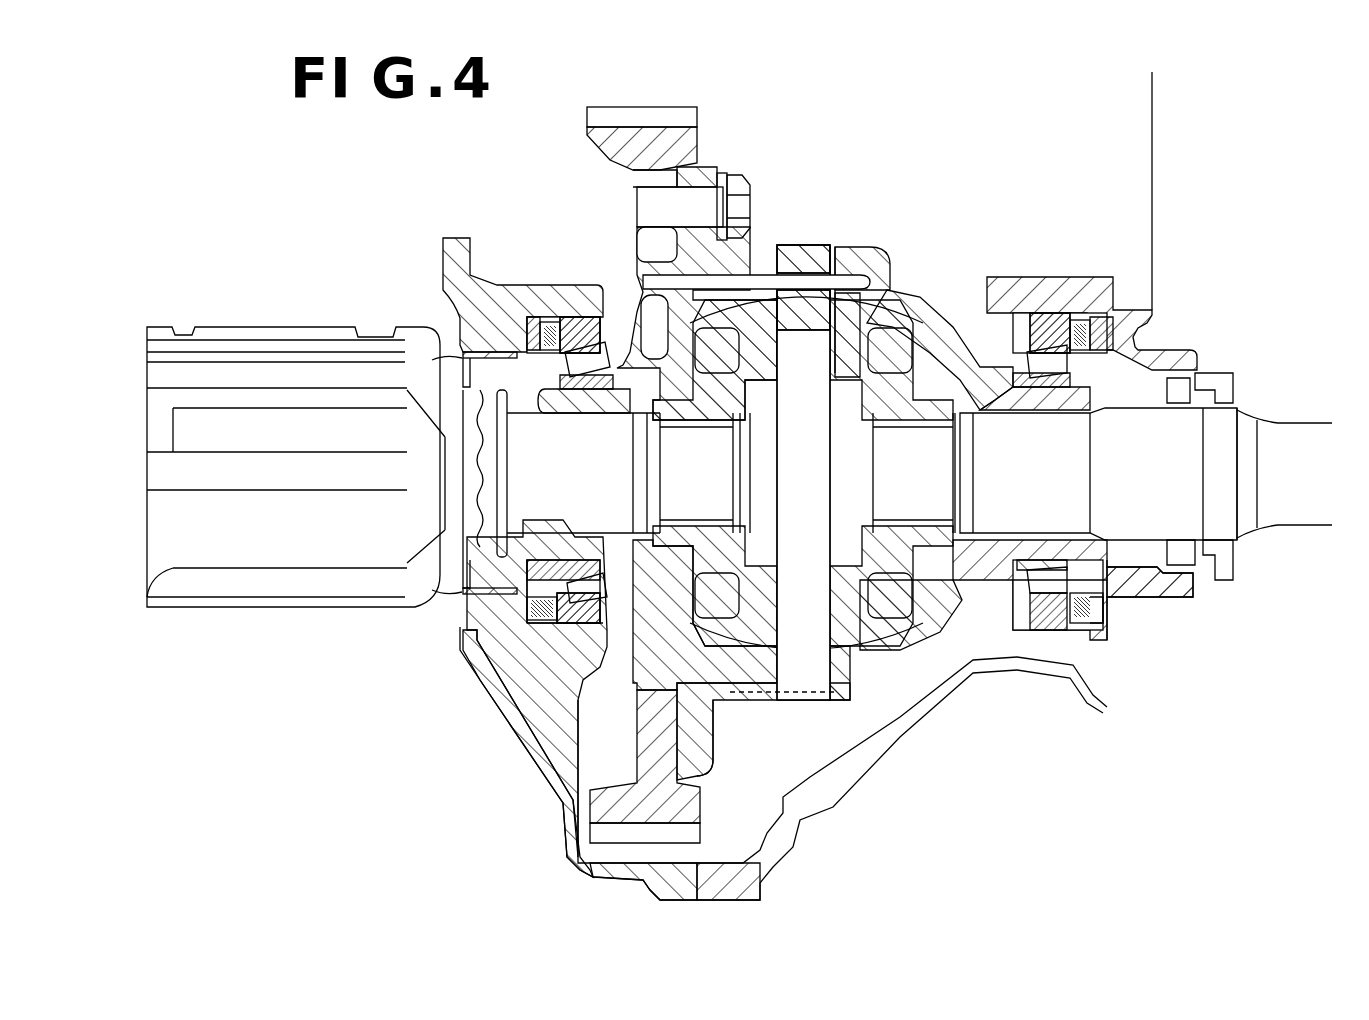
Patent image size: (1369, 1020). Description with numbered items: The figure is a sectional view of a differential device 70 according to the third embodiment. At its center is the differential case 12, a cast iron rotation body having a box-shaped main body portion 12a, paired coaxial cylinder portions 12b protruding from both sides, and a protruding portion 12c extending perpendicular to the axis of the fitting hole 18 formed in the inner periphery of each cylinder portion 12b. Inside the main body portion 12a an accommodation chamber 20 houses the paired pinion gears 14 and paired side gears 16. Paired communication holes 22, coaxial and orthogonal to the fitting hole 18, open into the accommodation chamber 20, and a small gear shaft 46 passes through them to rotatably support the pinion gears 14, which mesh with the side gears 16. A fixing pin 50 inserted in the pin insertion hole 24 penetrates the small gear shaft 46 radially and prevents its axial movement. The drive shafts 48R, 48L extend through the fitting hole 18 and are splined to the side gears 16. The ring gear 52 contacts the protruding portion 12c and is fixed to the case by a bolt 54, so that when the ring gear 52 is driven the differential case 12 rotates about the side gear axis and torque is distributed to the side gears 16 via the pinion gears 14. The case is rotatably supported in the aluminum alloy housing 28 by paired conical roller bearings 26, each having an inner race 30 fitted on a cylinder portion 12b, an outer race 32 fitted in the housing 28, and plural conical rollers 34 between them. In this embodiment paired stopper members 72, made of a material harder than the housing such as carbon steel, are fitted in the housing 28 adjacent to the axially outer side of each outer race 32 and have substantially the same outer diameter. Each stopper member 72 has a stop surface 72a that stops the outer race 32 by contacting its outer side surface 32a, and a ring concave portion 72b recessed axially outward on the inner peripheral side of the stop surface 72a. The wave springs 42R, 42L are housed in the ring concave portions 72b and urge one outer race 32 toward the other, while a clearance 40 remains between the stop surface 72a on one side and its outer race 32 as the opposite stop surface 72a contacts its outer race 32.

The differential case 12 is at (922, 666).
The main body portion 12a is at (743, 703).
The cylinder portions 12b is at (467, 600).
The protruding portion 12c is at (715, 170).
The pinion gears 14 is at (880, 288).
The side gears 16 is at (637, 330).
The fitting hole 18 is at (455, 583).
The accommodation chamber 20 is at (862, 476).
The communication holes 22 is at (836, 248).
The pin insertion hole 24 is at (868, 292).
The conical roller bearings 26 is at (1003, 323).
The housing 28 is at (745, 885).
The inner race 30 is at (1028, 592).
The outer race 32 is at (1040, 625).
The outer side surface 32a is at (1082, 612).
The conical rollers 34 is at (1047, 587).
The clearance 40 is at (558, 327).
The wave spring 42L is at (543, 633).
The wave spring 42R is at (1070, 613).
The small gear shaft 46 is at (800, 683).
The drive shaft 48L is at (403, 312).
The drive shaft 48R is at (1277, 410).
The fixing pin 50 is at (802, 274).
The ring gear 52 is at (641, 116).
The bolt 54 is at (746, 202).
The differential device 70 is at (1033, 158).
The stopper members 72 is at (537, 327).
The stop surface 72a is at (1045, 335).
The ring concave portion 72b is at (1085, 353).